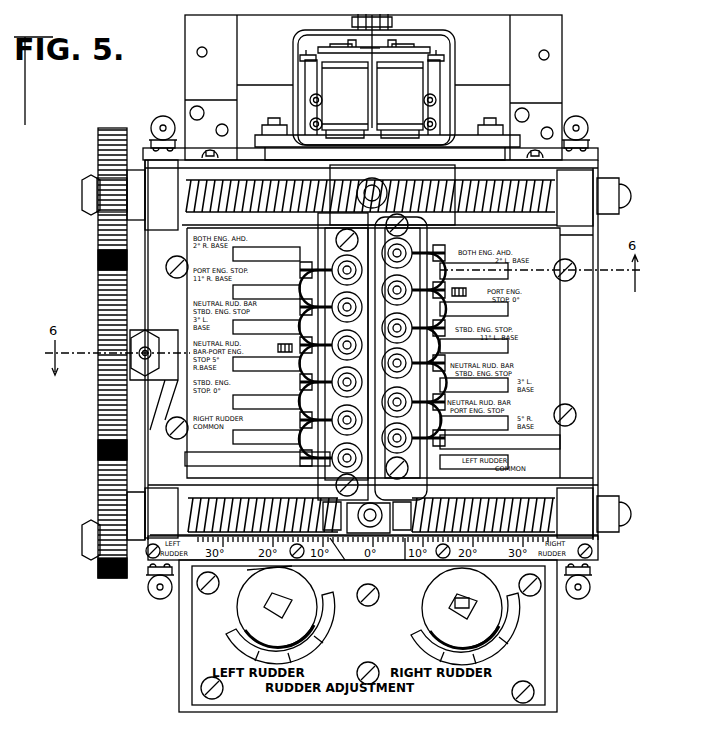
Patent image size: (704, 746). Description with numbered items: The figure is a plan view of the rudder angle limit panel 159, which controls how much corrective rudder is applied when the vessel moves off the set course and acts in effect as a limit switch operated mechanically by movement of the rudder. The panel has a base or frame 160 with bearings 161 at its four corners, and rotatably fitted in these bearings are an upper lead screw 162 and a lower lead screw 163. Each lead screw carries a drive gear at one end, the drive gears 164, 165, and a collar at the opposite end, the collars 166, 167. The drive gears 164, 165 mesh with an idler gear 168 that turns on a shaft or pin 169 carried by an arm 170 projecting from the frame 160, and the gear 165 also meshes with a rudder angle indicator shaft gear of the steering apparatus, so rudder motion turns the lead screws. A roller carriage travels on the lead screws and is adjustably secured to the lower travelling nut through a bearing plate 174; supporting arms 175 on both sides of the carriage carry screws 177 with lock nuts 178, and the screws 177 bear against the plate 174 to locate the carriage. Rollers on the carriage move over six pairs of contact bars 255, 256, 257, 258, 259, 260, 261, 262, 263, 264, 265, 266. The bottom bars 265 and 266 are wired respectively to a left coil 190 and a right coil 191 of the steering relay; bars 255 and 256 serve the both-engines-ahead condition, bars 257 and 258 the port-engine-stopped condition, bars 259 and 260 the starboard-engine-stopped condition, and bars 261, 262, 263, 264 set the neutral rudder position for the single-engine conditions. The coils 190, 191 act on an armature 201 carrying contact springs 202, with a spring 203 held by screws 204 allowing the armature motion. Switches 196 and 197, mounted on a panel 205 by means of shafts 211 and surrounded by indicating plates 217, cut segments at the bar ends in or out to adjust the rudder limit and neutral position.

The rudder angle limit panel 159 is at (582, 344).
The base or frame 160 is at (598, 162).
The bearings 161 is at (575, 198).
The upper lead screw 162 is at (228, 185).
The lower lead screw 163 is at (228, 497).
The drive gear 164 is at (98, 142).
The drive gear 165 is at (98, 560).
The collar 166 is at (615, 184).
The collar 167 is at (612, 500).
The idler gear 168 is at (98, 405).
The shaft or pin 169 is at (88, 355).
The arm 170 is at (136, 385).
The bearing plate 174 is at (380, 505).
The supporting arms 175 is at (405, 560).
The screws 177 is at (252, 570).
The lock nuts 178 is at (335, 558).
The left coil 190 is at (345, 100).
The right coil 191 is at (400, 100).
The switch 196 is at (485, 586).
The switch 197 is at (298, 584).
The armature 201 is at (438, 58).
The contact springs 202 is at (430, 50).
The spring 203 is at (380, 48).
The screws 204 is at (392, 20).
The panel 205 is at (368, 636).
The shafts 211 is at (472, 601).
The indicating plates 217 is at (315, 642).
The contact bar 255 is at (474, 271).
The contact bar 256 is at (266, 254).
The contact bar 257 is at (474, 309).
The contact bar 258 is at (266, 292).
The contact bar 259 is at (474, 346).
The contact bar 260 is at (266, 402).
The contact bar 261 is at (474, 385).
The contact bar 262 is at (266, 327).
The contact bar 263 is at (474, 423).
The contact bar 264 is at (266, 364).
The contact bar 265 is at (252, 466).
The contact bar 266 is at (512, 449).